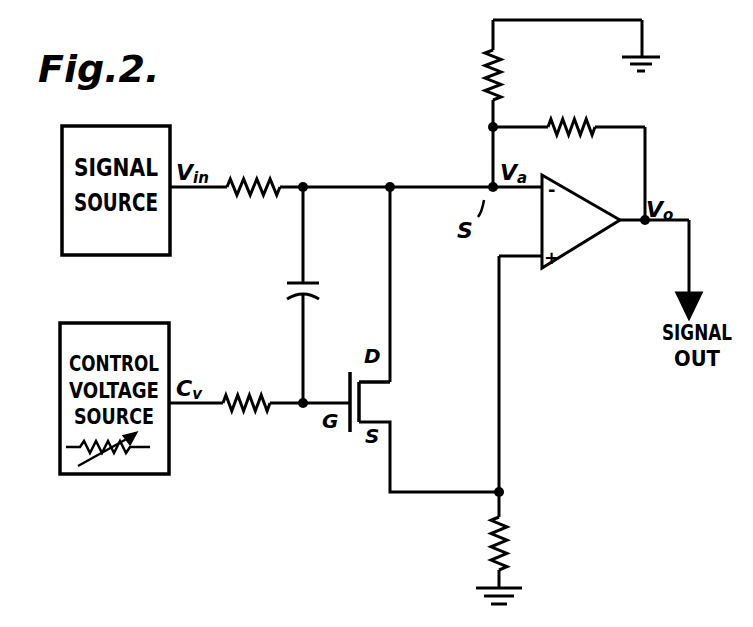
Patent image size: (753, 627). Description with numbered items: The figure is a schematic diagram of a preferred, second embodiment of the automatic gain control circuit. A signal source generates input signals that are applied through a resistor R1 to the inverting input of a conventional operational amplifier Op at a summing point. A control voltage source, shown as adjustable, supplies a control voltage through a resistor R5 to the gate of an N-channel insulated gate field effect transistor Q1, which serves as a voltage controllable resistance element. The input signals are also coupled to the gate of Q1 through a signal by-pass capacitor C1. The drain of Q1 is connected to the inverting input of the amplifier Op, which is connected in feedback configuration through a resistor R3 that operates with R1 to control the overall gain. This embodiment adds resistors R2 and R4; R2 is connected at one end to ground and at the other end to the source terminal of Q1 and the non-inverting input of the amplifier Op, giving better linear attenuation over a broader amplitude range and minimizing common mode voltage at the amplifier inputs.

The resistor R1 is at (253, 173).
The resistor R2 is at (519, 543).
The resistor R3 is at (571, 111).
The resistor R4 is at (467, 75).
The resistor R5 is at (246, 388).
The capacitor C1 is at (285, 287).
The N-channel insulated gate field effect transistor Q1 is at (382, 402).
The operational amplifier Op is at (580, 221).